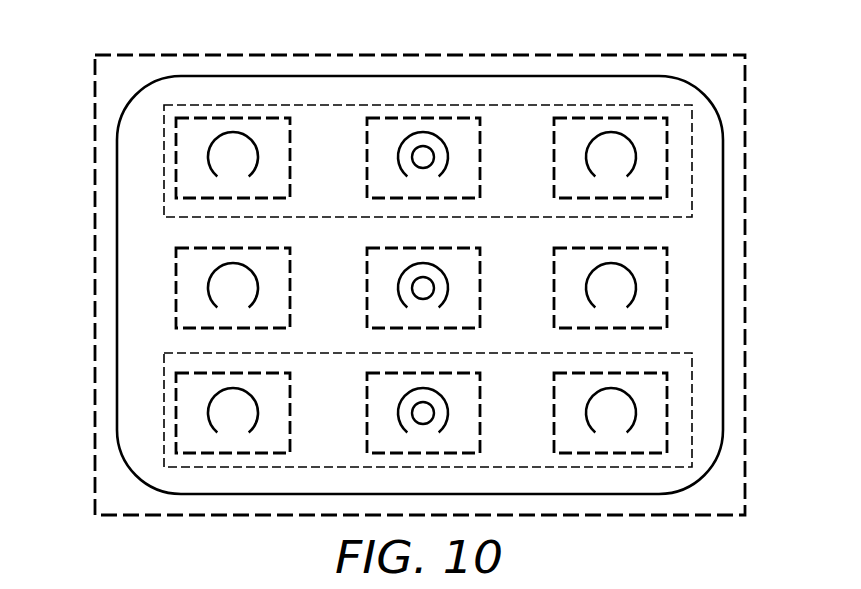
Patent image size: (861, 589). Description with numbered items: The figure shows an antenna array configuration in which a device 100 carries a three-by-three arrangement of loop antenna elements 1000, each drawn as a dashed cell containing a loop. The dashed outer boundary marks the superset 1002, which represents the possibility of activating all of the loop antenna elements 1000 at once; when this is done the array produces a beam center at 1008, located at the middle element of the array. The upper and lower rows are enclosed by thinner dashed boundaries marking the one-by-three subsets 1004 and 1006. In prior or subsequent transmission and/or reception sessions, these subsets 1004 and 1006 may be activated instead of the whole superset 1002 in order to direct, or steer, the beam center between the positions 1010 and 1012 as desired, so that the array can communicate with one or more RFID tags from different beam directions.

The electronic device 100 is at (775, 178).
The loop antenna elements 1000 is at (176, 157).
The superset 1002 is at (95, 435).
The 1×3 subset 1004 is at (622, 105).
The 1×3 subset 1006 is at (692, 412).
The beam center 1008 is at (434, 288).
The beam center 1010 is at (434, 157).
The beam center 1012 is at (434, 413).